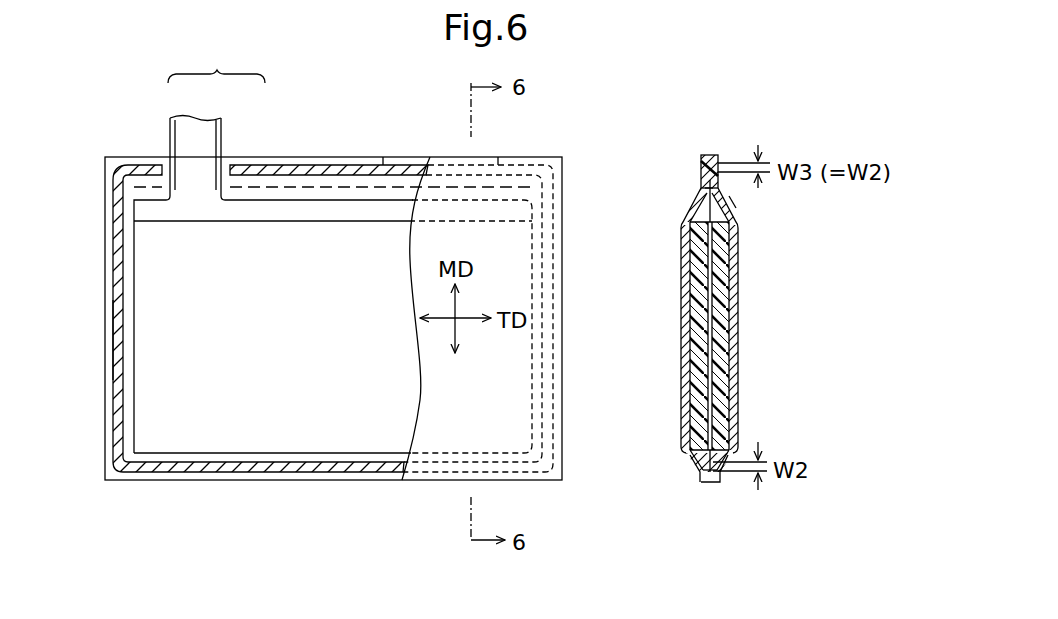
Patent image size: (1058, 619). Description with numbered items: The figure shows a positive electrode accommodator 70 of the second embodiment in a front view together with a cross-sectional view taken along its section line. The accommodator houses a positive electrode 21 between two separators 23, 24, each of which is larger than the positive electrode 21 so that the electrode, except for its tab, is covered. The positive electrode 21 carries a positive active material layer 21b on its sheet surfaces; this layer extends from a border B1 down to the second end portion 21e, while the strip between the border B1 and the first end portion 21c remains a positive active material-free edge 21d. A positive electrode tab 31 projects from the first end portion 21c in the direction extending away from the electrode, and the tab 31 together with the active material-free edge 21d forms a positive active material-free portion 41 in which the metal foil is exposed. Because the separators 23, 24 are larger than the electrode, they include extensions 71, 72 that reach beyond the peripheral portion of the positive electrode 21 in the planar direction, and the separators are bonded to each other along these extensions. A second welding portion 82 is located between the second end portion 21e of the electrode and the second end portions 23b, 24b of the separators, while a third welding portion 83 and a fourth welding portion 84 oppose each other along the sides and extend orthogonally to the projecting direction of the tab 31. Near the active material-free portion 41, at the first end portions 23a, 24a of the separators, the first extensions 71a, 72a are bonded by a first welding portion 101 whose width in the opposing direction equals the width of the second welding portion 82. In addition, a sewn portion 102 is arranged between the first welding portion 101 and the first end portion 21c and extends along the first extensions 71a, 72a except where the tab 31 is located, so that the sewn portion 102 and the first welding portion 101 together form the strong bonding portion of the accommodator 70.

The positive electrode accommodator 70 is at (553, 83).
The positive electrode 21 is at (157, 455).
The positive active material layer 21b is at (205, 440).
The first end portion 21c is at (285, 200).
The positive active material-free edge 21d is at (250, 213).
The second end portion 21e is at (250, 452).
The separator 23 is at (427, 477).
The first end portion of separator 23a is at (535, 156).
The second end portion of separator 23b is at (520, 482).
The separator 24 is at (325, 475).
The first end portion of separator 24a is at (128, 156).
The second end portion of separator 24b is at (367, 480).
The positive electrode tab 31 is at (188, 125).
The positive active material-free portion 41 is at (216, 62).
The extension 71 is at (498, 157).
The first extension 71a is at (730, 200).
The extension 72 is at (388, 157).
The first extension 72a is at (690, 210).
The second welding portion 82 is at (288, 468).
The third welding portion 83 is at (123, 389).
The fourth welding portion 84 is at (553, 403).
The first welding portion 101 is at (312, 172).
The sewn portion 102 is at (347, 187).
The border B1 is at (337, 222).